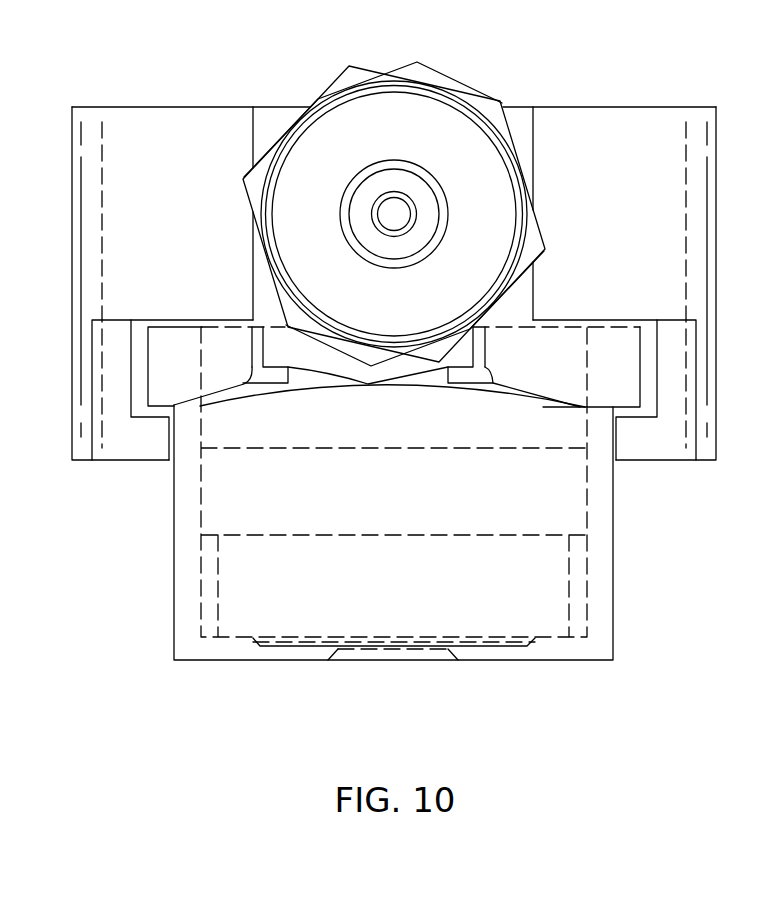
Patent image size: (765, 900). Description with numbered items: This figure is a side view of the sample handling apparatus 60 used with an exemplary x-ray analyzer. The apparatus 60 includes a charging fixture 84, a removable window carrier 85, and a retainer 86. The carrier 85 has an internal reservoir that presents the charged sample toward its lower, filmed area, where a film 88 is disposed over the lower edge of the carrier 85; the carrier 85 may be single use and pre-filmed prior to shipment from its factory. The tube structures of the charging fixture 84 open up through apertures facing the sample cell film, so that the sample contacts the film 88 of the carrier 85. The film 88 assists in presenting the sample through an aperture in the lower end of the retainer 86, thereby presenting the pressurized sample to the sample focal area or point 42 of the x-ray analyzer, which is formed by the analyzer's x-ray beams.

The apparatus 60 is at (383, 390).
The charging fixture 84 is at (160, 142).
The removable window carrier 85 is at (257, 598).
The retainer 86 is at (185, 634).
The sample focal area or point 42 is at (390, 649).
The film 88 is at (520, 646).